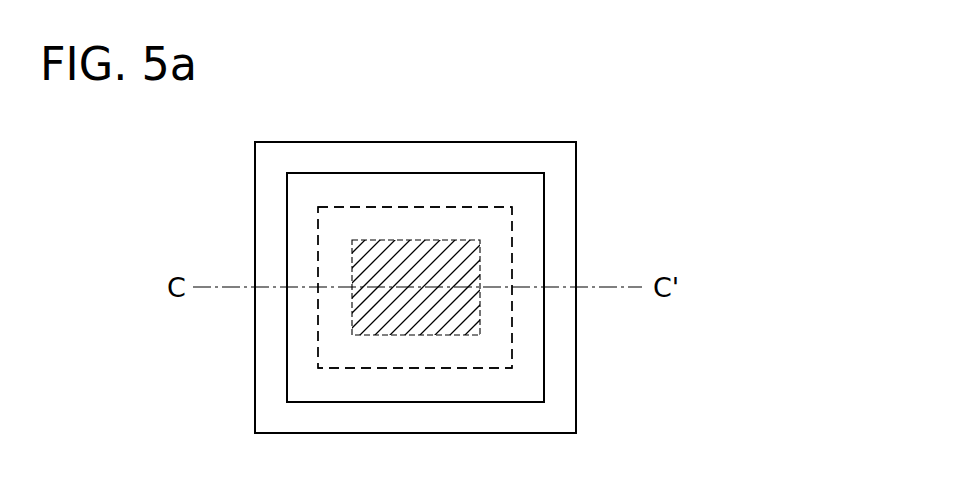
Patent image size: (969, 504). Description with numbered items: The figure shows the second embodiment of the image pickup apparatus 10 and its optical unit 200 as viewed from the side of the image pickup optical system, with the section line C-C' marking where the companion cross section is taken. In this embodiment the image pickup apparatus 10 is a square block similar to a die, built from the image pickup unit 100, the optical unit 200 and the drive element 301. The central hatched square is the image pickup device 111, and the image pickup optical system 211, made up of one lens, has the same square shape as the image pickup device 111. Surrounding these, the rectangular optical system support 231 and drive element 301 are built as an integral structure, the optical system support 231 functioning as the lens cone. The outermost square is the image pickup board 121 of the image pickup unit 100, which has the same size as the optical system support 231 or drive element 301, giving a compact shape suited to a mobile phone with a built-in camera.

The image pickup apparatus 10 is at (807, 170).
The image pickup unit 100 is at (803, 430).
The optical unit 200 is at (807, 300).
The image pickup device 111 is at (412, 237).
The image pickup board 121 is at (578, 157).
The image pickup optical system 211 is at (533, 223).
The optical system support 231 is at (577, 350).
The drive element 301 is at (547, 287).